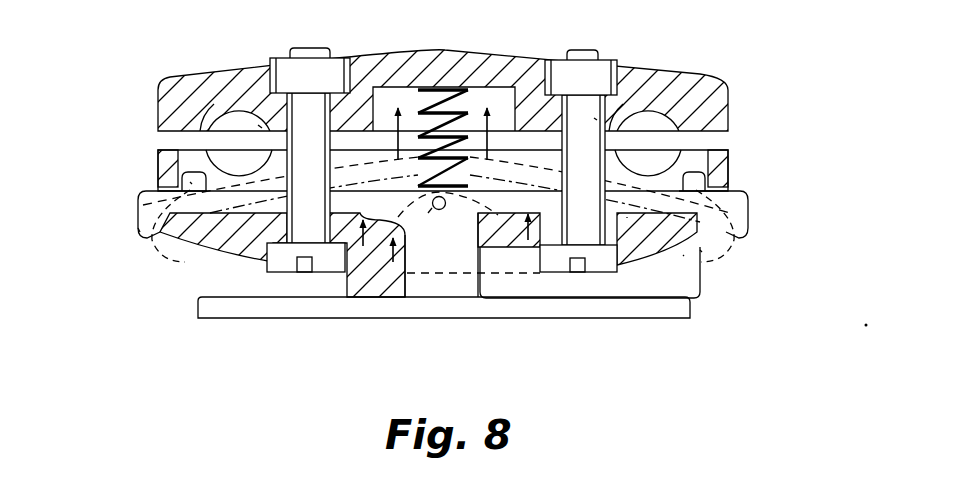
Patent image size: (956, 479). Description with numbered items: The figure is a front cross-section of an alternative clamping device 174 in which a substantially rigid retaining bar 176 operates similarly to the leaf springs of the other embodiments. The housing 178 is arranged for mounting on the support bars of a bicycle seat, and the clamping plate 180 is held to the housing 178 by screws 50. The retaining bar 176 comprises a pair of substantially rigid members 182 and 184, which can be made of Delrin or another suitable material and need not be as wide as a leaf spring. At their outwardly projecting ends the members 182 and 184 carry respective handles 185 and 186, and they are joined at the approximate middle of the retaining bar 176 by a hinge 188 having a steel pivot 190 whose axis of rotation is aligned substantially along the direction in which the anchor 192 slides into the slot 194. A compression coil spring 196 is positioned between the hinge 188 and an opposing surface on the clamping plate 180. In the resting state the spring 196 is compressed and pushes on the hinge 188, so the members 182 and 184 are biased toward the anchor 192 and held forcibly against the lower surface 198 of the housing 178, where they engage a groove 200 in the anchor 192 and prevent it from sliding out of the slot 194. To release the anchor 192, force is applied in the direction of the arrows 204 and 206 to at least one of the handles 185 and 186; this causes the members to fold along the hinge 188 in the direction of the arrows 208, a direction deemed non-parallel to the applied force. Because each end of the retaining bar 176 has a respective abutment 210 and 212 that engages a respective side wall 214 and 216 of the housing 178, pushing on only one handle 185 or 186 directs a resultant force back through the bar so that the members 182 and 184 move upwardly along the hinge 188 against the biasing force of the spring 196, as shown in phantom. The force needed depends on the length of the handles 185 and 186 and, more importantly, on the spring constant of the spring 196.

The screws 50 is at (262, 127).
The clamping device 174 is at (716, 70).
The retaining bar 176 is at (520, 262).
The housing 178 is at (684, 256).
The clamping plate 180 is at (506, 112).
The member 182 is at (240, 207).
The member 184 is at (627, 217).
The handle 185 is at (142, 233).
The handle 186 is at (743, 193).
The hinge 188 is at (410, 247).
The pivot 190 is at (441, 211).
The anchor 192 is at (458, 298).
The slot 194 is at (393, 262).
The compression coil spring 196 is at (418, 100).
The lower surface 198 is at (362, 250).
The groove 200 is at (472, 215).
The arrows 204 is at (130, 212).
The arrows 206 is at (756, 213).
The arrows 208 is at (348, 60).
The abutment 210 is at (192, 183).
The abutment 212 is at (700, 250).
The side wall 214 is at (158, 163).
The side wall 216 is at (723, 170).